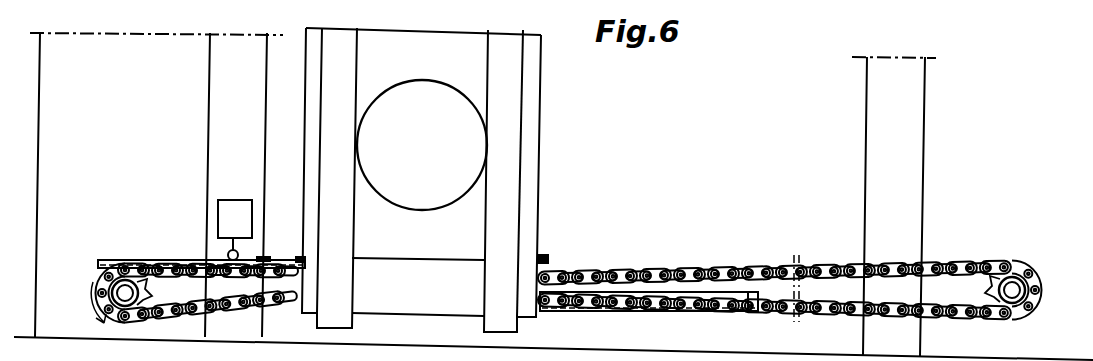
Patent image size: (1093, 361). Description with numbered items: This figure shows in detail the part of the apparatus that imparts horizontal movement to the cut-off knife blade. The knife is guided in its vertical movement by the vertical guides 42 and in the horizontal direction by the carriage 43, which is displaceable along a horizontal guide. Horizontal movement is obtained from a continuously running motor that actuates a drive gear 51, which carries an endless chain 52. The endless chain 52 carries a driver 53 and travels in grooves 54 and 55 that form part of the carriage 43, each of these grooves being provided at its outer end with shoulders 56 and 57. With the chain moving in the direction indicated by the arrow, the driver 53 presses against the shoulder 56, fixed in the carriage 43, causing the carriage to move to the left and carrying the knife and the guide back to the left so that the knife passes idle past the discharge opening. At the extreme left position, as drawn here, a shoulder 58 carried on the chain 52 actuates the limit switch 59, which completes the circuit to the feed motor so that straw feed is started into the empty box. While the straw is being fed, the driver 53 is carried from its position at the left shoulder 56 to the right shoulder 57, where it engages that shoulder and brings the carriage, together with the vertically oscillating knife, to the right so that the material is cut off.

The vertical guides 42 is at (510, 171).
The carriage 43 is at (417, 272).
The drive gear 51 is at (1015, 289).
The endless chain 52 is at (966, 268).
The driver 53 is at (134, 268).
The groove 54 is at (291, 261).
The groove 55 is at (653, 311).
The shoulder 56 is at (100, 270).
The shoulder 57 is at (741, 311).
The shoulder 58 is at (262, 257).
The limit switch 59 is at (234, 210).